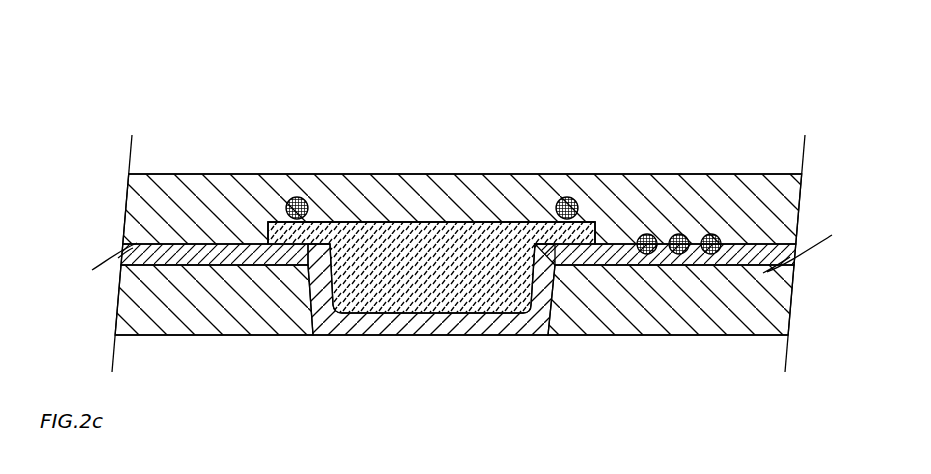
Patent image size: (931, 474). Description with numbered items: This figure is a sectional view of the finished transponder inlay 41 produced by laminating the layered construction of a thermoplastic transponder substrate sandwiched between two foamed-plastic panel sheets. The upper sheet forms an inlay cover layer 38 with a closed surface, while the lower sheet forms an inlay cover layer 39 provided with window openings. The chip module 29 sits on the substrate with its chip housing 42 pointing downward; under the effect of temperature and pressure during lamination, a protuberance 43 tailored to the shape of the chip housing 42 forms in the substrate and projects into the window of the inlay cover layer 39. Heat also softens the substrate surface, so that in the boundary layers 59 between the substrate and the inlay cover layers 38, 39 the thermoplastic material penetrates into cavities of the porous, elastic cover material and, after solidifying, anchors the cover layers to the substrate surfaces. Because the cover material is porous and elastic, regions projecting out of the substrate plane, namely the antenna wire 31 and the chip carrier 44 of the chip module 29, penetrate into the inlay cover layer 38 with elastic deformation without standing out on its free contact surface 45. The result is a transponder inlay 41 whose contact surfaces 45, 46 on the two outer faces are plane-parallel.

The chip module 29 is at (454, 140).
The transponder inlay 41 is at (430, 134).
The inlay cover layer 38 is at (713, 193).
The free contact surface 45 is at (762, 174).
The boundary layers 59 is at (197, 241).
The chip carrier 44 is at (335, 221).
The chip housing 42 is at (527, 221).
The protuberance 43 is at (427, 330).
The inlay cover layer 39 is at (640, 332).
The contact surface 46 is at (752, 332).
The antenna wire 31 is at (651, 233).